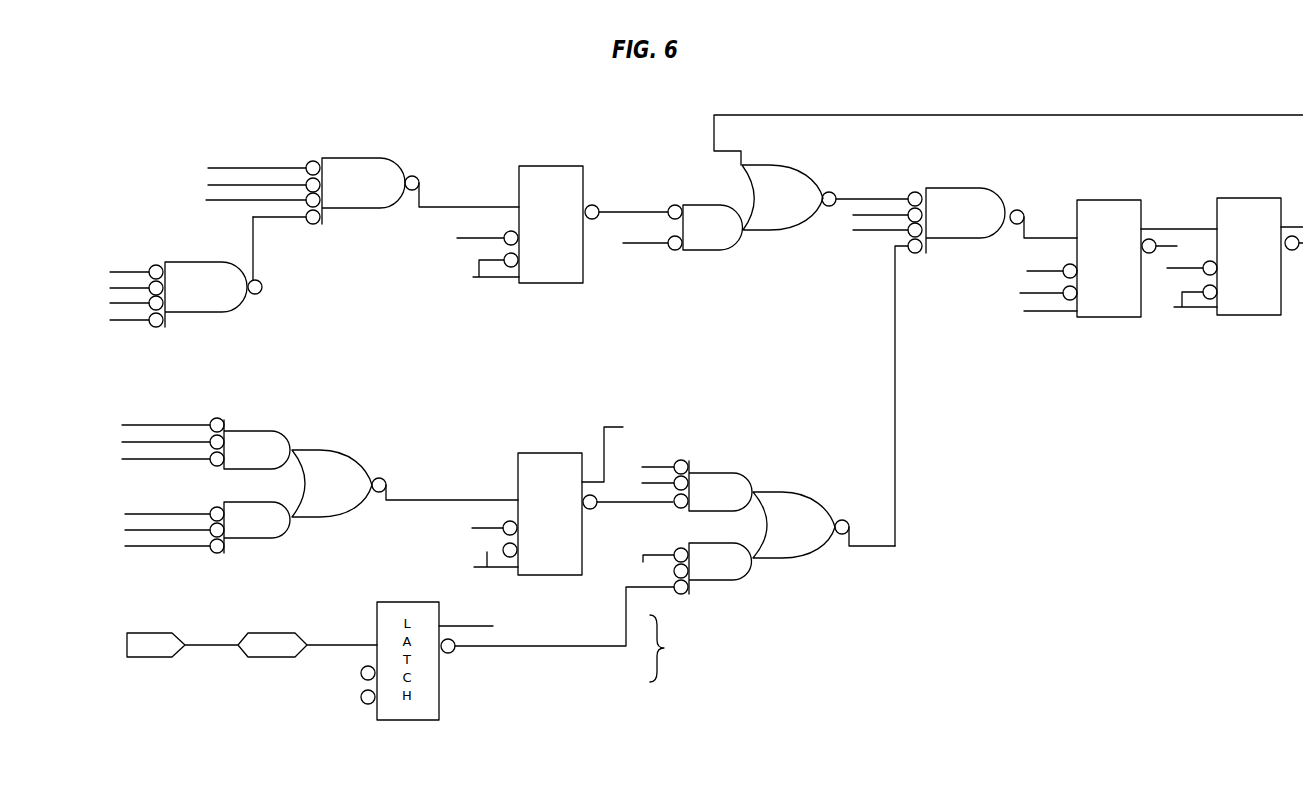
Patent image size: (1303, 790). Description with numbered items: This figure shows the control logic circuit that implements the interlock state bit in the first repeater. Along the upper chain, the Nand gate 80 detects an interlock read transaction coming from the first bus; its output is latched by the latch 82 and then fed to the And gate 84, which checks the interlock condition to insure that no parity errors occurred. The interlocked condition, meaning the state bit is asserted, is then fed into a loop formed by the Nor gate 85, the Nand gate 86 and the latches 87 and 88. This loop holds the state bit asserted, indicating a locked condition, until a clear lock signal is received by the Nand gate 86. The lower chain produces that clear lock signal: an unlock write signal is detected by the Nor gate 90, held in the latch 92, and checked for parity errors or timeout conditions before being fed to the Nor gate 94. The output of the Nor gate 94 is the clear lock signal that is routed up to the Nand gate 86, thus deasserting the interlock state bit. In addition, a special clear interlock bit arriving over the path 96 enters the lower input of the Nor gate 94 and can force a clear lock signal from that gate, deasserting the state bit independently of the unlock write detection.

The Nand gate 80 is at (355, 165).
The latch 82 is at (552, 175).
The And gate 84 is at (698, 210).
The Nor gate 85 is at (771, 177).
The Nand gate 86 is at (962, 208).
The latch 87 is at (1118, 212).
The latch 88 is at (1245, 210).
The Nor gate 90 is at (330, 455).
The latch 92 is at (549, 458).
The Nor gate 94 is at (777, 503).
The path 96 is at (668, 648).